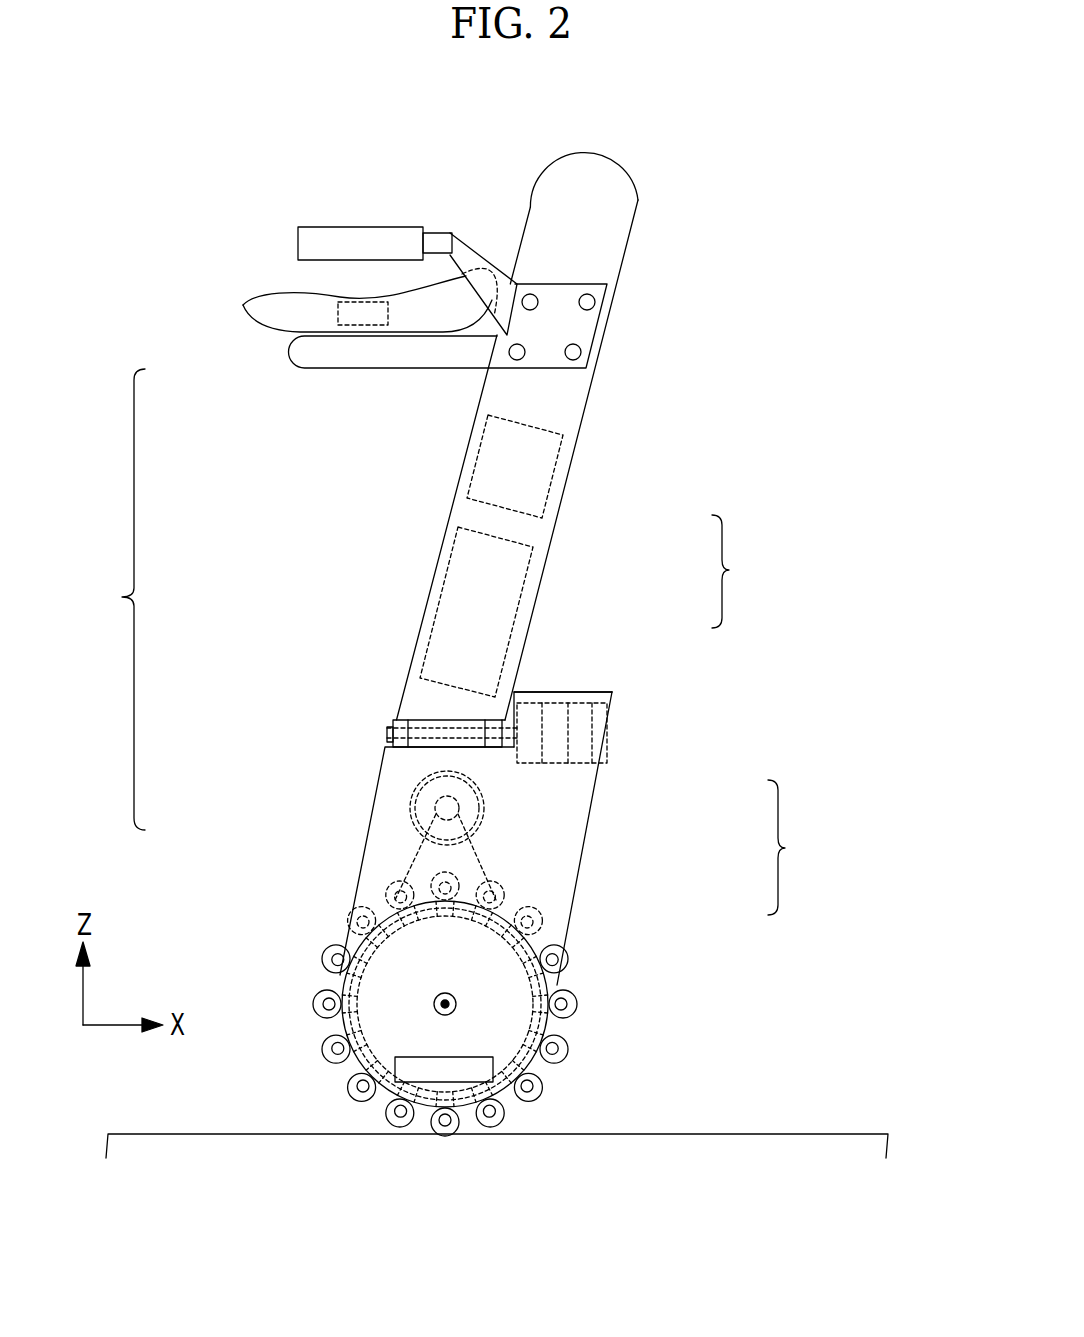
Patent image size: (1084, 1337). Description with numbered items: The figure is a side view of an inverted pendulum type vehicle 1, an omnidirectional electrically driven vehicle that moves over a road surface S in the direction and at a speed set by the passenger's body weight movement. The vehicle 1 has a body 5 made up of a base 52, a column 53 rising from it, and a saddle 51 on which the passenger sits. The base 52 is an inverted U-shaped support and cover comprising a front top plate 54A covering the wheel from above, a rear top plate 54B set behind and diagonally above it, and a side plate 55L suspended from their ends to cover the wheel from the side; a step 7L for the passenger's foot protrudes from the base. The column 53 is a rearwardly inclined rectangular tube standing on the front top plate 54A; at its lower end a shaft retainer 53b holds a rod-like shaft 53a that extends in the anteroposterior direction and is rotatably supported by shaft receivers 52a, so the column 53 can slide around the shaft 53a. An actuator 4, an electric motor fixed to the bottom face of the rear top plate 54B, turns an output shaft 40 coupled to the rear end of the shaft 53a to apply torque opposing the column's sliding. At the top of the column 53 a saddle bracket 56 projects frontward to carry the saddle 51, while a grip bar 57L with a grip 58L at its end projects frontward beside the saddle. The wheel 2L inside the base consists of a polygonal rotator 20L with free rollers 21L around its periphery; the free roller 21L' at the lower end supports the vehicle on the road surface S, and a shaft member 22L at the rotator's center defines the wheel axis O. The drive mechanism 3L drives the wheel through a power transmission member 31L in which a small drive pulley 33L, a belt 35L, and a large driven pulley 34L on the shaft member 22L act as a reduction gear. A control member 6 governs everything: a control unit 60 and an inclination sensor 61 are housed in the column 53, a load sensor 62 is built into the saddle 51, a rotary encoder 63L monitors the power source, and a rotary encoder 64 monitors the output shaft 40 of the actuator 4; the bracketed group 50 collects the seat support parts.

The vehicle 1 is at (745, 150).
The wheel 2L is at (560, 1108).
The rotator 20L is at (548, 990).
The free roller 21L is at (437, 1160).
The free roller at lower end position 21L' is at (439, 1165).
The shaft member 22L is at (457, 1004).
The drive mechanism 3L is at (492, 779).
The power transmission member 31L is at (801, 847).
The drive pulley 33L is at (483, 803).
The driven pulley 34L is at (530, 912).
The belt 35L is at (483, 858).
The actuator 4 is at (607, 730).
The output shaft 40 is at (508, 720).
The body 5 is at (372, 741).
The seat support structure 50 is at (737, 571).
The saddle 51 is at (270, 302).
The base 52 is at (588, 684).
The shaft receiver 52a is at (397, 723).
The column 53 is at (555, 517).
The shaft 53a is at (410, 722).
The shaft retainer 53b is at (425, 722).
The front top plate 54A is at (470, 720).
The rear top plate 54B is at (565, 692).
The side plate 55L is at (358, 858).
The saddle bracket 56 is at (375, 360).
The grip bar 57L is at (464, 246).
The grip 58L is at (372, 238).
The control member 6 is at (124, 599).
The control unit 60 is at (445, 537).
The inclination sensor 61 is at (470, 448).
The load sensor 62 is at (338, 312).
The rotary encoder 63L is at (410, 815).
The rotary encoder 64 is at (517, 760).
The step 7L is at (395, 1064).
The wheel axis O is at (433, 998).
The road surface S is at (822, 1133).